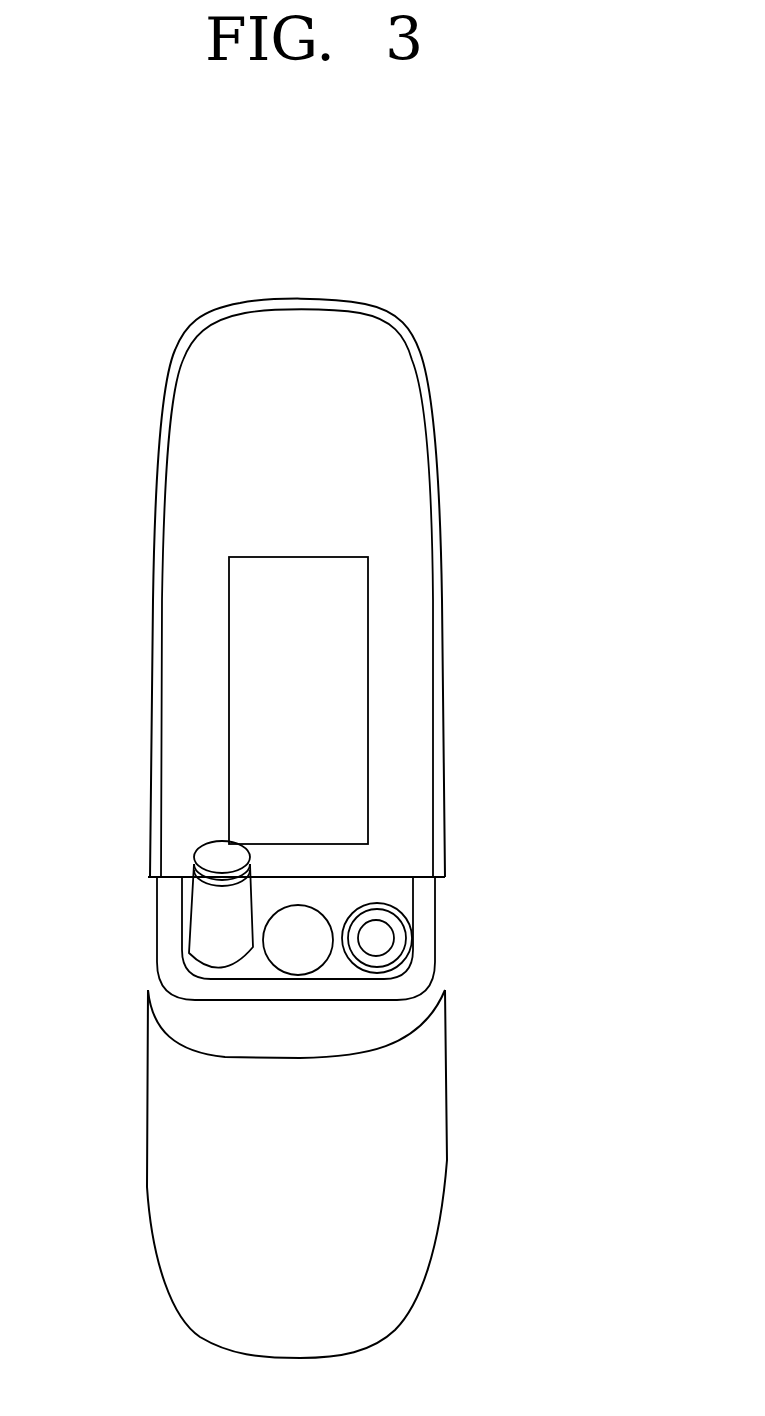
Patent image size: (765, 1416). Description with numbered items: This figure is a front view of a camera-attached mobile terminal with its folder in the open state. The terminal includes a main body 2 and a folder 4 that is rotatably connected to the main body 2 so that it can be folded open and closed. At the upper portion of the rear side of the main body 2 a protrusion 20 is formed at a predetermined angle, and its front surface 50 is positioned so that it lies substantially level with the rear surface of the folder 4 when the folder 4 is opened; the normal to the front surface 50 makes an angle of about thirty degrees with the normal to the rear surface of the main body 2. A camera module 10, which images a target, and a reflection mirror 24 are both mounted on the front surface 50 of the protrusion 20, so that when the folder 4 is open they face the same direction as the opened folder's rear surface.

The main body 2 is at (428, 1185).
The folder 4 is at (410, 514).
The camera module 10 is at (373, 935).
The protrusion 20 is at (383, 988).
The reflection mirror 24 is at (288, 950).
The front surface 50 is at (385, 897).